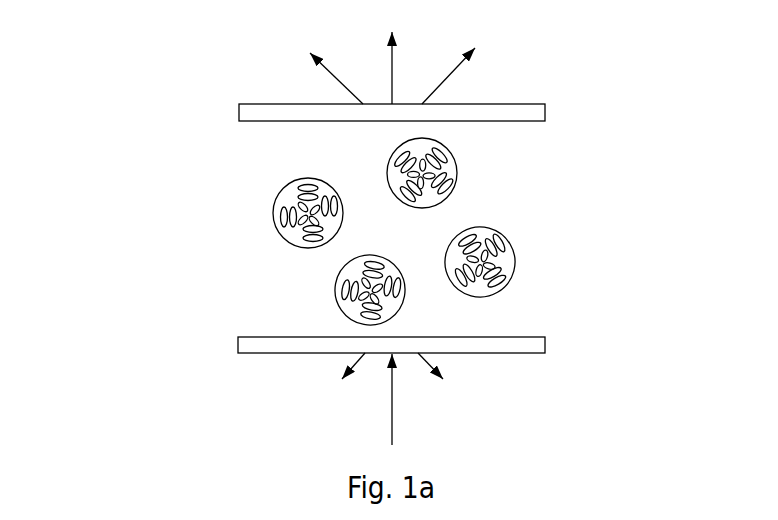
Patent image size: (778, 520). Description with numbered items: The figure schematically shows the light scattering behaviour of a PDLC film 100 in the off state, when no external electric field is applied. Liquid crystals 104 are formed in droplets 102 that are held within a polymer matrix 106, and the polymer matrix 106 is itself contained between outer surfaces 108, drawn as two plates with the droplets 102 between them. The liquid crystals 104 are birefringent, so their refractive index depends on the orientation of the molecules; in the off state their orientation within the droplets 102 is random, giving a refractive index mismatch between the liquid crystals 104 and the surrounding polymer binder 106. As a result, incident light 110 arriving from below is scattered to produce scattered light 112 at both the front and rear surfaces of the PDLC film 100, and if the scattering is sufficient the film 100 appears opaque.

The PDLC film 100 is at (145, 60).
The droplets 102 is at (515, 258).
The liquid crystals 104 is at (292, 226).
The polymer matrix 106 is at (522, 173).
The outer surfaces 108 is at (545, 346).
The incident light 110 is at (392, 425).
The scattered light 112 is at (310, 50).